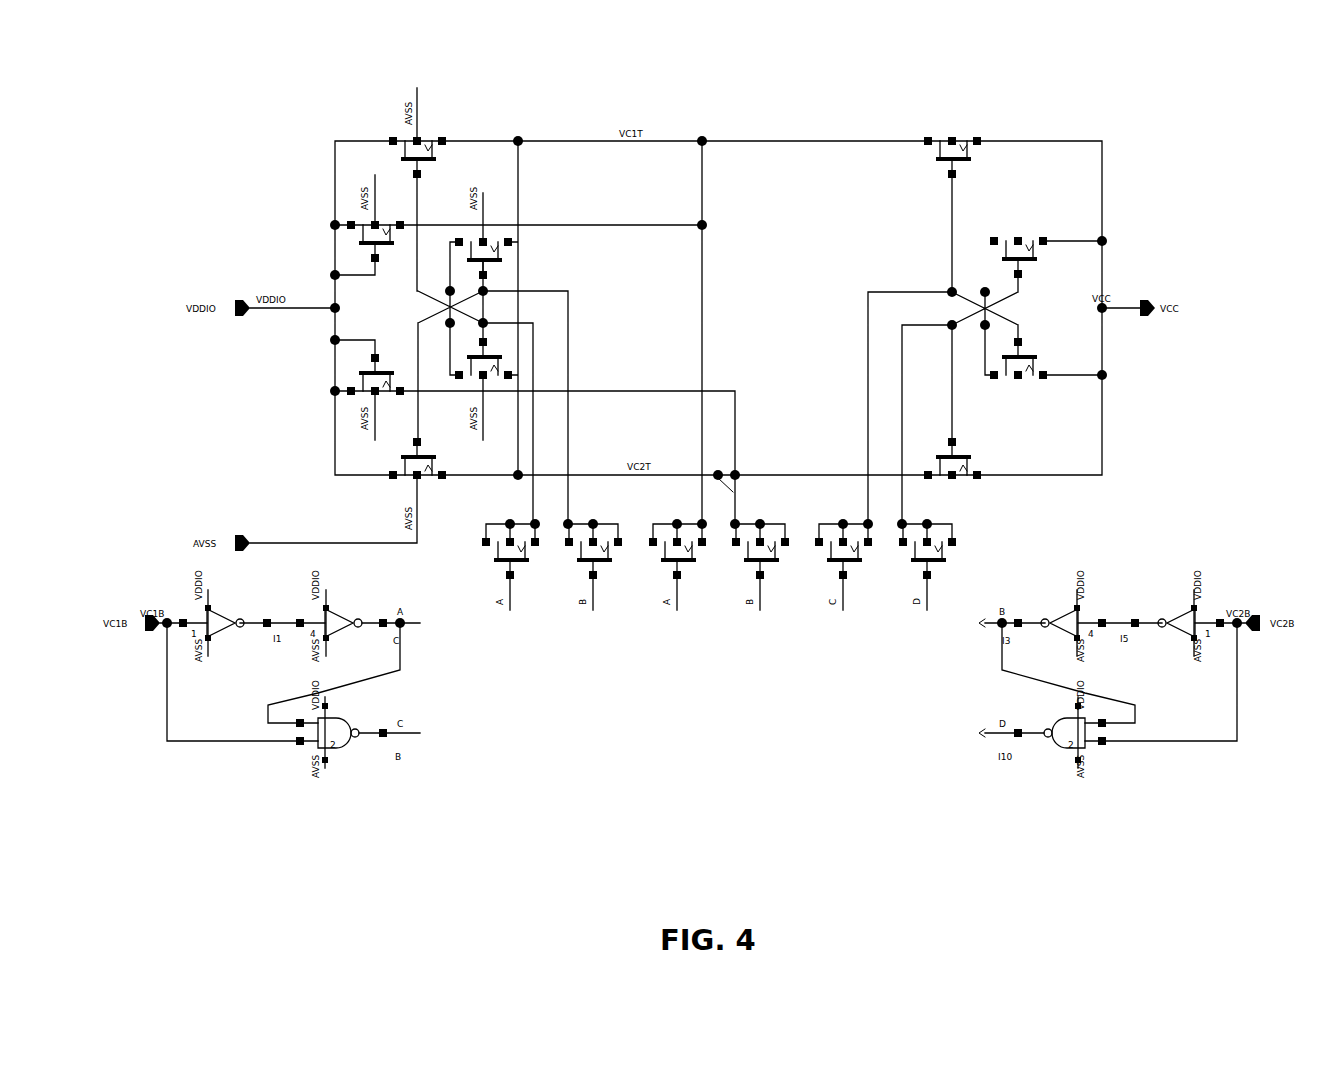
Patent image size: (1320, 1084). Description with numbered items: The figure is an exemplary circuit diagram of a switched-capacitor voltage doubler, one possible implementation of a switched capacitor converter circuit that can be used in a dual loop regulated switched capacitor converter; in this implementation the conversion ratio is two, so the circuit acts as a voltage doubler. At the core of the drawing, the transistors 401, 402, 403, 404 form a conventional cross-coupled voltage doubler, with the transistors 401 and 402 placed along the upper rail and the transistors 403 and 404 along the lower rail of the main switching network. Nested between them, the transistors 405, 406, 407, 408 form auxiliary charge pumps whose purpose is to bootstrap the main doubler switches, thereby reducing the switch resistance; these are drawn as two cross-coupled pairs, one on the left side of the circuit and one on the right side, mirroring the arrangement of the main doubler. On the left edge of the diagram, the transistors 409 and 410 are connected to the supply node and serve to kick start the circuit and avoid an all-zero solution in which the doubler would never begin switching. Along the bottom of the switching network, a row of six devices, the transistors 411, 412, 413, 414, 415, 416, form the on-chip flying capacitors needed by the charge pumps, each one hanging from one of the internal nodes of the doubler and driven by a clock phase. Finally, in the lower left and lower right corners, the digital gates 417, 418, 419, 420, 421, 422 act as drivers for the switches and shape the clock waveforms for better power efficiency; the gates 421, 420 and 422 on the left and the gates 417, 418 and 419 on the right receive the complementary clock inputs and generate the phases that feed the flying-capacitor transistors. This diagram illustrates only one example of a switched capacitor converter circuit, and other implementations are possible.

The transistor 401 is at (440, 126).
The transistor 402 is at (936, 126).
The transistor 403 is at (388, 484).
The transistor 404 is at (995, 487).
The transistor 405 is at (523, 253).
The transistor 406 is at (1013, 227).
The transistor 407 is at (510, 364).
The transistor 408 is at (1035, 397).
The transistor 409 is at (345, 216).
The transistor 410 is at (352, 373).
The transistor 411 is at (530, 590).
The transistor 412 is at (613, 590).
The transistor 413 is at (697, 590).
The transistor 414 is at (780, 590).
The transistor 415 is at (870, 590).
The transistor 416 is at (943, 590).
The digital gate 417 is at (1112, 578).
The digital gate 418 is at (1220, 578).
The digital gate 419 is at (1100, 762).
The digital gate 420 is at (365, 648).
The digital gate 421 is at (228, 648).
The digital gate 422 is at (367, 758).